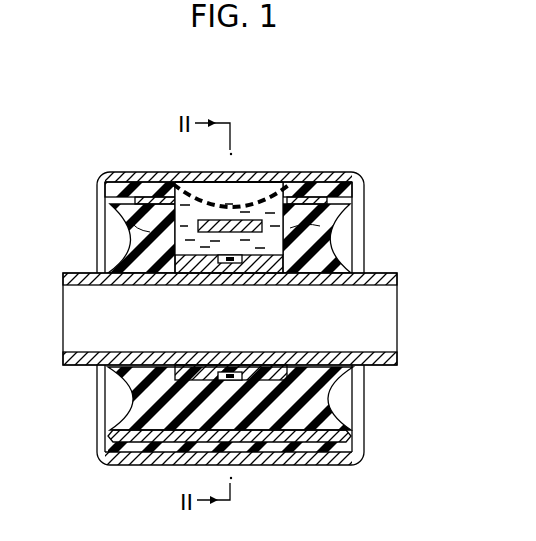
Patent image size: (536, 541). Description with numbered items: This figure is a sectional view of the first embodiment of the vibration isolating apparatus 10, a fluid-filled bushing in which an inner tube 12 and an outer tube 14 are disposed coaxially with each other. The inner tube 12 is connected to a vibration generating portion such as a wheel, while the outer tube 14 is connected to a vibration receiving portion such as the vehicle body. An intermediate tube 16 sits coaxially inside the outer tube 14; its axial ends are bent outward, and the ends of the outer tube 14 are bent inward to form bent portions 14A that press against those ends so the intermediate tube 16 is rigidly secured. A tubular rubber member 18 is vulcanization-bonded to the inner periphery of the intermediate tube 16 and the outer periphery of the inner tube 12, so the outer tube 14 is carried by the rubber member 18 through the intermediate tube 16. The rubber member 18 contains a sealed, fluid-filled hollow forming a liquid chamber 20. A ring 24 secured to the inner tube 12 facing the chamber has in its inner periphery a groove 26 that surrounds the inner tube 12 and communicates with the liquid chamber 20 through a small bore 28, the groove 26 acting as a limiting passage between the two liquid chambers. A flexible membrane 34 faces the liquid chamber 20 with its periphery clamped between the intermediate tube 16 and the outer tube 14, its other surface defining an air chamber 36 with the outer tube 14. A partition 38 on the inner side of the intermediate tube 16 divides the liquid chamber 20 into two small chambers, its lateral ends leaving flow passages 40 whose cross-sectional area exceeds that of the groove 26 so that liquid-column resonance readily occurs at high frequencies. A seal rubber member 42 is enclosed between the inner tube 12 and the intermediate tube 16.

The vibration isolating apparatus 10 is at (388, 155).
The inner tube 12 is at (380, 273).
The outer tube 14 is at (270, 178).
The bent portions 14A is at (100, 190).
The intermediate tube 16 is at (128, 212).
The tubular rubber member 18 is at (335, 243).
The liquid chamber 20 is at (197, 248).
The ring 24 is at (266, 263).
The groove 26 is at (227, 270).
The small bore 28 is at (208, 273).
The flexible membrane 34 is at (262, 192).
The air chamber 36 is at (237, 198).
The partition 38 is at (220, 219).
The flow passage 40 is at (150, 232).
The seal rubber member 42 is at (310, 445).